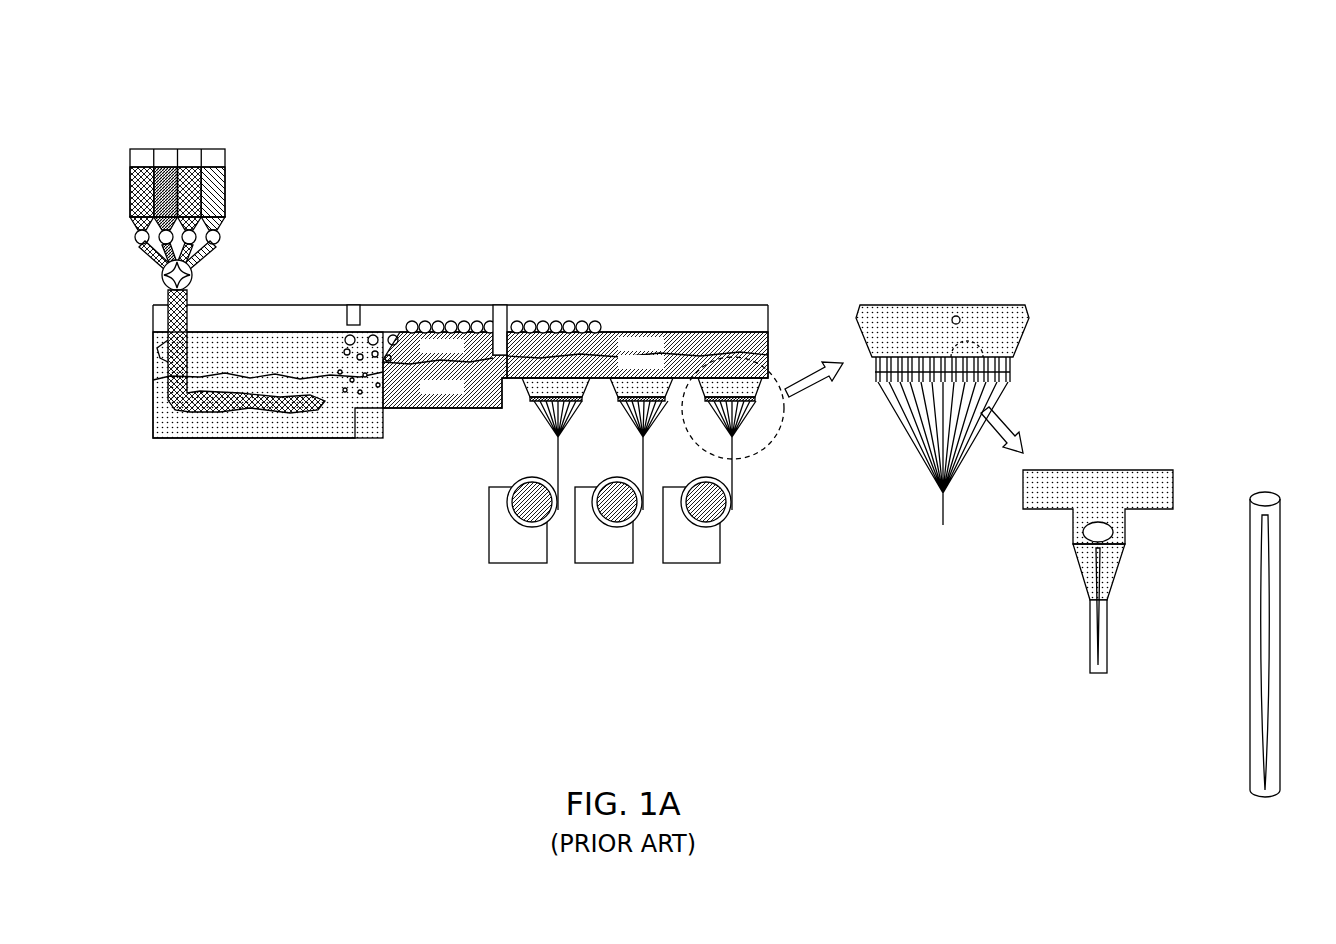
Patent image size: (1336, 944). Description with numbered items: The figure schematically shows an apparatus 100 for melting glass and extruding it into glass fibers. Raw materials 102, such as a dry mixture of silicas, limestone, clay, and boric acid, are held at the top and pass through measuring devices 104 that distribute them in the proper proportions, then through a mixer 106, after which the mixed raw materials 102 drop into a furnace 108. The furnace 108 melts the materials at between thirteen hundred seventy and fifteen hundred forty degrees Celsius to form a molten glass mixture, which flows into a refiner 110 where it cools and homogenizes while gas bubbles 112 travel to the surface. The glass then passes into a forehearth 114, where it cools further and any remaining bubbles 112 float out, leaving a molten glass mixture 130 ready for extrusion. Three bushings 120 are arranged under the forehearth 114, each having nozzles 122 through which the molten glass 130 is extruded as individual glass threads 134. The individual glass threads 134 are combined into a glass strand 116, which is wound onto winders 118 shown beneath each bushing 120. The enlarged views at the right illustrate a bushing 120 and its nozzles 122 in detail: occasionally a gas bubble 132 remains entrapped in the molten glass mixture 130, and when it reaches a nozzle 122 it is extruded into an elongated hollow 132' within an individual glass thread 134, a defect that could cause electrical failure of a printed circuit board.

The apparatus 100 is at (505, 136).
The raw materials 102 is at (210, 130).
The measuring devices 104 is at (238, 227).
The mixer 106 is at (162, 274).
The furnace 108 is at (300, 318).
The refiner 110 is at (461, 312).
The gas bubbles 112 is at (480, 316).
The forehearth 114 is at (712, 318).
The glass strand 116 is at (765, 474).
The winders 118 is at (512, 498).
The bushings 120 is at (523, 386).
The nozzles 122 is at (1017, 371).
The molten glass mixture 130 is at (712, 355).
The gas bubble 132 is at (1032, 420).
The elongated hollow 132' is at (1134, 659).
The individual glass threads 134 is at (997, 391).